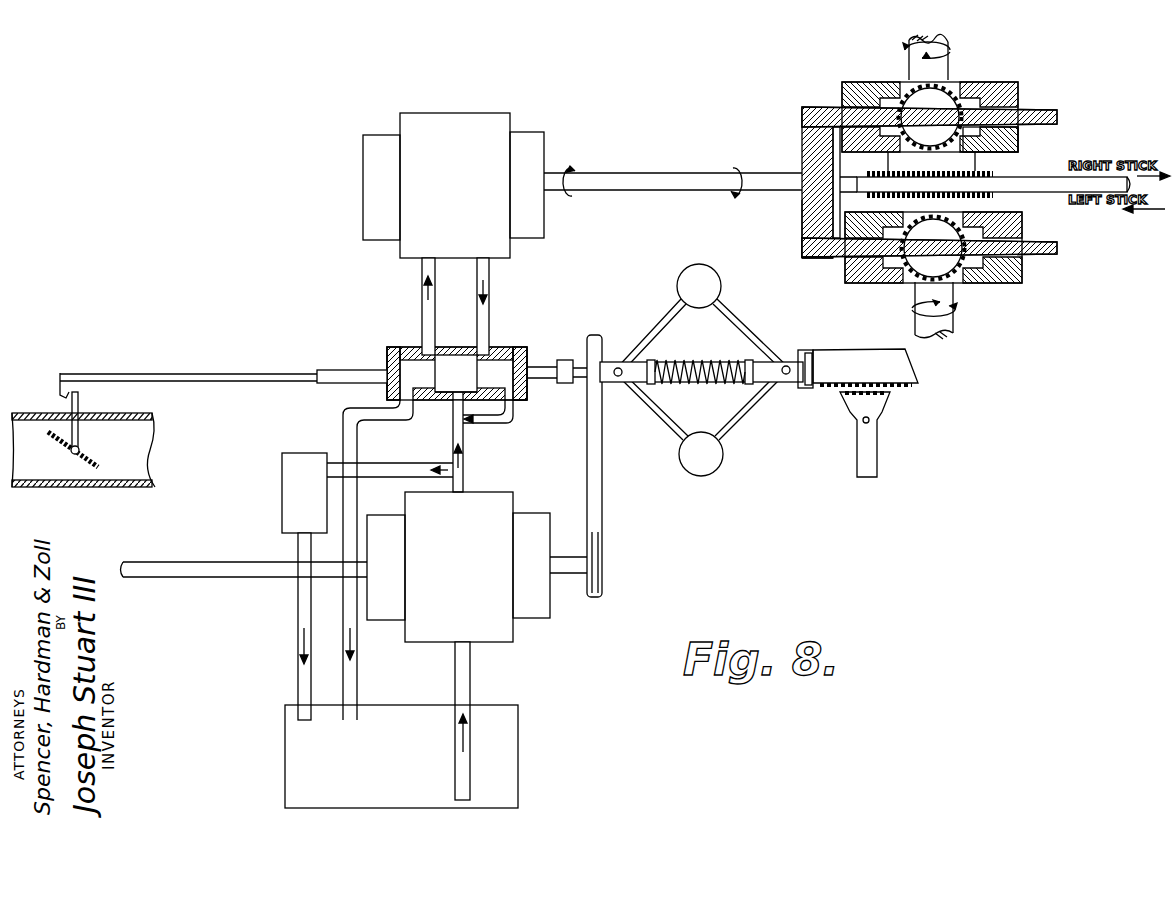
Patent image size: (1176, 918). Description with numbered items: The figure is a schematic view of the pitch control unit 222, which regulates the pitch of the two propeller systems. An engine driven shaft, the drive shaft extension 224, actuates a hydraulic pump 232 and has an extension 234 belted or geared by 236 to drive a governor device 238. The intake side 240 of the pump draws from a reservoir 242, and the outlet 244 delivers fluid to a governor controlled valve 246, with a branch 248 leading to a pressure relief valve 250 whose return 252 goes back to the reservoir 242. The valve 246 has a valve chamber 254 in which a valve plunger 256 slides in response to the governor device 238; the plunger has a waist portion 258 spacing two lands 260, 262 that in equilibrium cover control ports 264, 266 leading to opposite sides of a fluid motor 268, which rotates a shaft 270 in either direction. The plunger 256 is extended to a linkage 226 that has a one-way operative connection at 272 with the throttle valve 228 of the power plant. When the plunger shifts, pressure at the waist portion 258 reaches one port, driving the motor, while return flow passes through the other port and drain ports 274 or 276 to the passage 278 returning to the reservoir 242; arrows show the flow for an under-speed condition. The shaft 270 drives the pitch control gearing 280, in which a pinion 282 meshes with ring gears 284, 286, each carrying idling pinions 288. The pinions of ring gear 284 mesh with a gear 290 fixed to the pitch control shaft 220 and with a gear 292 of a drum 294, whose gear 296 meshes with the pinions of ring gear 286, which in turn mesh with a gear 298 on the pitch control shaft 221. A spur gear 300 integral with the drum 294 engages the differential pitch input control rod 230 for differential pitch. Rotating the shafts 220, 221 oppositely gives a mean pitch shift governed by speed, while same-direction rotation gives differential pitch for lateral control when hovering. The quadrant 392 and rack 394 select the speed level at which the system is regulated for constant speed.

The pitch control shaft 220 is at (948, 42).
The pitch control shaft 221 is at (953, 334).
The pitch control unit 222 is at (660, 235).
The drive shaft extension 224 is at (214, 570).
The linkage 226 is at (203, 373).
The throttle valve 228 is at (95, 458).
The differential pitch input control rod 230 is at (857, 186).
The hydraulic pump 232 is at (505, 640).
The shaft extension 234 is at (568, 575).
The belt or gearing 236 is at (603, 502).
The governor device 238 is at (730, 432).
The pump intake 240 is at (470, 685).
The reservoir 242 is at (520, 733).
The pump outlet 244 is at (465, 446).
The governor controlled valve 246 is at (391, 350).
The branch 248 is at (383, 478).
The pressure relief valve 250 is at (282, 508).
The relief valve return 252 is at (298, 624).
The valve chamber 254 is at (398, 362).
The valve plunger 256 is at (518, 350).
The waist portion 258 is at (452, 356).
The land 260 is at (441, 398).
The land 262 is at (515, 399).
The control port 264 is at (422, 345).
The control port 266 is at (489, 345).
The fluid motor 268 is at (466, 122).
The motor shaft 270 is at (673, 185).
The one-way operative connection 272 is at (58, 392).
The drain port 274 is at (392, 412).
The drain port 276 is at (512, 418).
The return passage 278 is at (343, 440).
The pitch control gearing 280 is at (810, 108).
The pinion 282 is at (815, 237).
The ring gear 284 is at (1030, 108).
The ring gear 286 is at (1058, 248).
The idling pinion 288 is at (995, 83).
The gear 290 is at (868, 83).
The gear 292 is at (1005, 148).
The drum 294 is at (888, 165).
The gear 296 is at (997, 214).
The gear 298 is at (882, 283).
The spur gear 300 is at (998, 173).
The quadrant 392 is at (883, 405).
The rack 394 is at (828, 380).